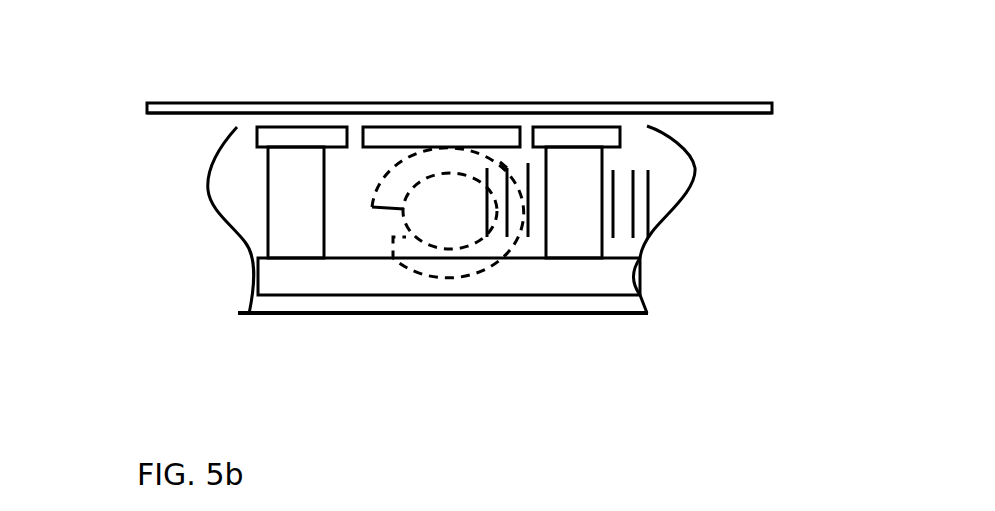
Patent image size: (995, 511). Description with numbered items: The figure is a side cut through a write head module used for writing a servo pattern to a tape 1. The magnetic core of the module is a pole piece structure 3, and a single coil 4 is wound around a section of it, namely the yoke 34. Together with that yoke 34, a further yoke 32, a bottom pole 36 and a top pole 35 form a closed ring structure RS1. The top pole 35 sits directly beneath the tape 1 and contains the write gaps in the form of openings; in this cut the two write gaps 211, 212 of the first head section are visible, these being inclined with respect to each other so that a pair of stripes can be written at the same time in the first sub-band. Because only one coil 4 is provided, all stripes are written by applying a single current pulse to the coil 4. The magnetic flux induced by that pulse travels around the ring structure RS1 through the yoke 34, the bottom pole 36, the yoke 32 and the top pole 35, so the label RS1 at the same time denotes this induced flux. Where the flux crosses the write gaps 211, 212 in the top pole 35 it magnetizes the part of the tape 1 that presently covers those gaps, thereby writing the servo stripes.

The tape 1 is at (723, 103).
The pole piece structure 3 is at (263, 113).
The write gap 211 is at (357, 125).
The write gap 212 is at (528, 124).
The top pole 35 is at (577, 125).
The yoke 32 is at (277, 235).
The yoke 34 is at (580, 218).
The bottom pole 36 is at (300, 296).
The coil 4 is at (505, 202).
The ring structure RS1 is at (347, 204).